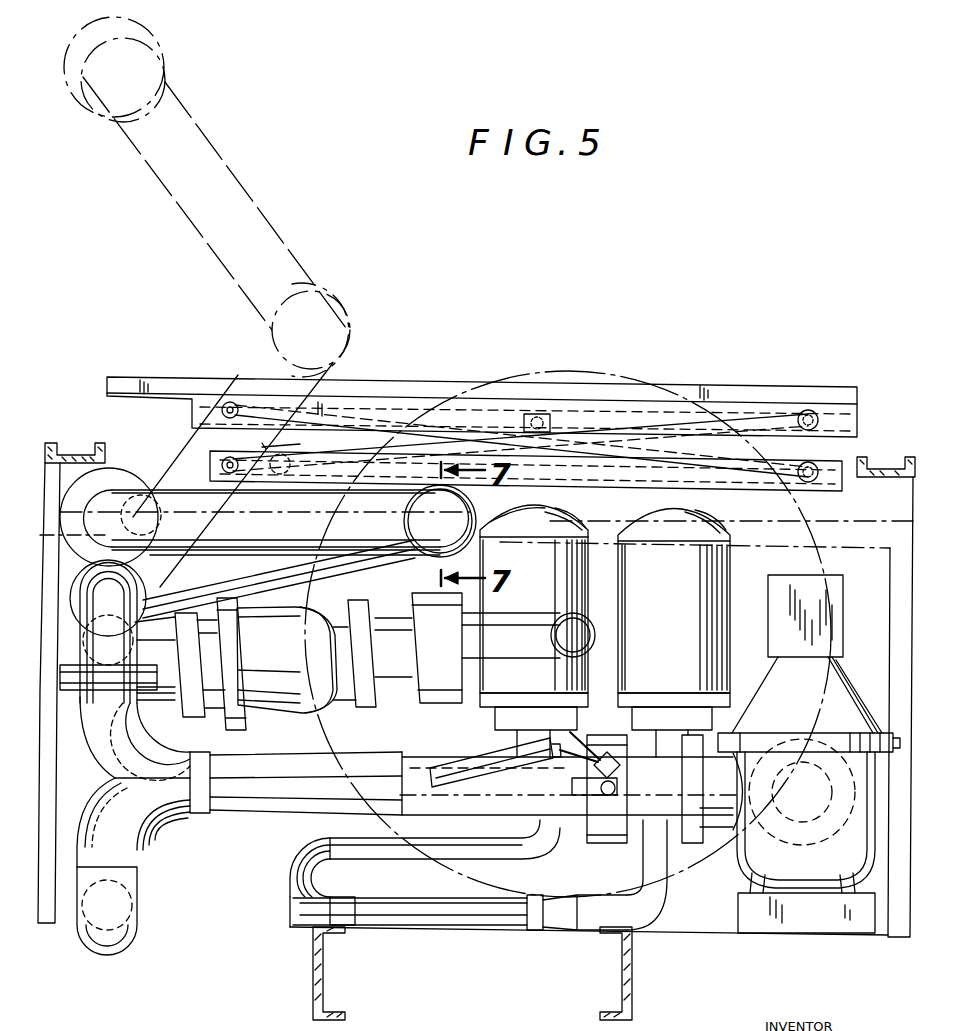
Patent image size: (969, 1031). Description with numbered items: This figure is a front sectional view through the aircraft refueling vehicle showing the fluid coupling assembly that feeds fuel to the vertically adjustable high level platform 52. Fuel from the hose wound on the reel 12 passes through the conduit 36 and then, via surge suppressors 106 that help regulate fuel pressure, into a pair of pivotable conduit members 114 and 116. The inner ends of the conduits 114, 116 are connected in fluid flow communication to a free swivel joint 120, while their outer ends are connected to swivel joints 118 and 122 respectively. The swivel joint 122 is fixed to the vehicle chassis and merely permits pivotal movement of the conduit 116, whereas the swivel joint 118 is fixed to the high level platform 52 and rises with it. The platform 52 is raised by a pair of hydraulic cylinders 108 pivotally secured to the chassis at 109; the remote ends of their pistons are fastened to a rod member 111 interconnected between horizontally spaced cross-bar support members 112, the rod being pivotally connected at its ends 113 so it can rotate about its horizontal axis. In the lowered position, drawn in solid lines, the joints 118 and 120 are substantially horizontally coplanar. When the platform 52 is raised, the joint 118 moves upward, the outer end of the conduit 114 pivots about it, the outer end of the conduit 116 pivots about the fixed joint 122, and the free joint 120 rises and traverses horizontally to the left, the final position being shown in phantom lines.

The reel 12 is at (600, 370).
The conduit 36 is at (598, 638).
The high level platform 52 is at (877, 360).
The surge suppressors 106 is at (657, 523).
The hydraulic cylinders 108 is at (340, 440).
The pivotal securing point 109 is at (228, 462).
The rod member 111 is at (532, 416).
The cross-bar support members 112 is at (655, 445).
The rod member ends 113 is at (542, 418).
The pivotable conduit member 114 is at (212, 148).
The pivotable conduit member 116 is at (268, 362).
The swivel joint 118 is at (160, 58).
The swivel joint 120 is at (352, 345).
The swivel joint 122 is at (140, 592).